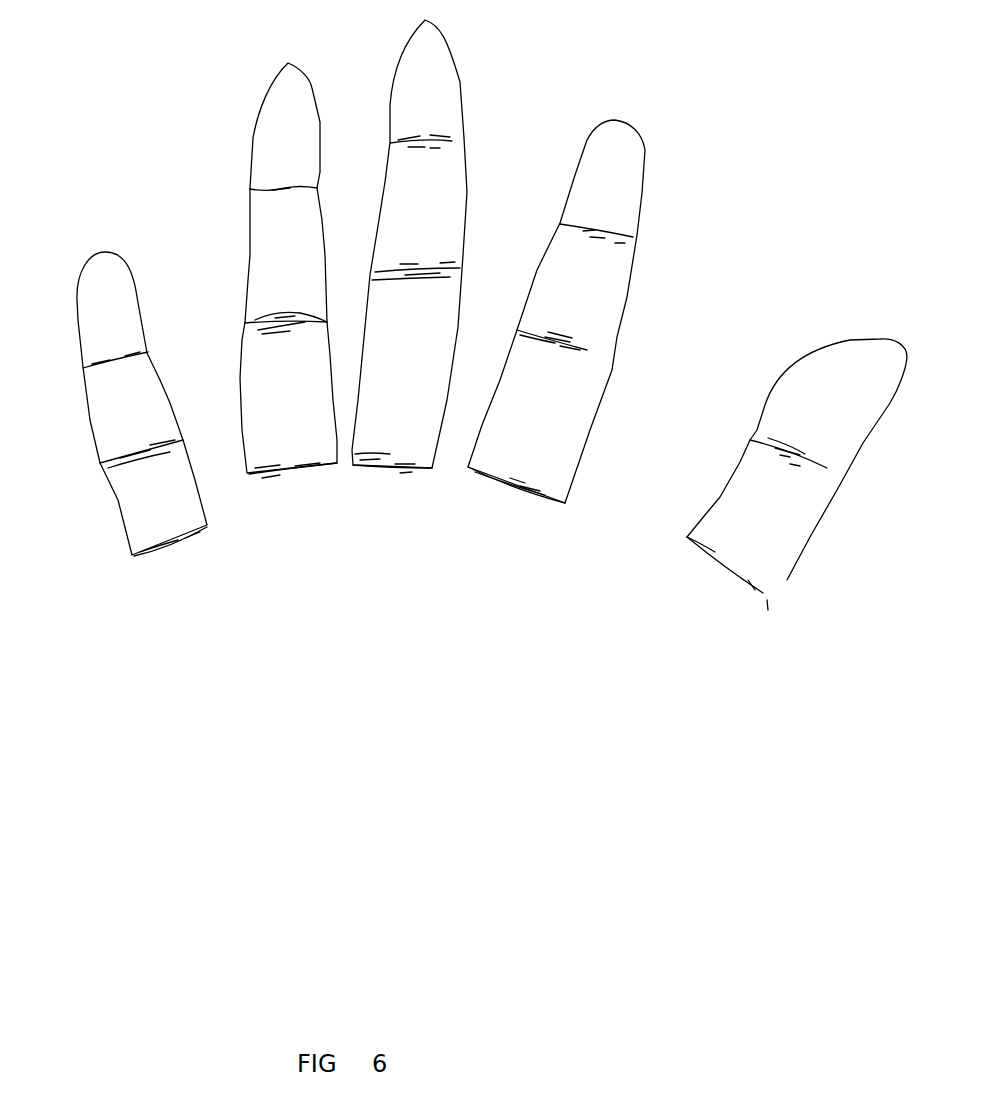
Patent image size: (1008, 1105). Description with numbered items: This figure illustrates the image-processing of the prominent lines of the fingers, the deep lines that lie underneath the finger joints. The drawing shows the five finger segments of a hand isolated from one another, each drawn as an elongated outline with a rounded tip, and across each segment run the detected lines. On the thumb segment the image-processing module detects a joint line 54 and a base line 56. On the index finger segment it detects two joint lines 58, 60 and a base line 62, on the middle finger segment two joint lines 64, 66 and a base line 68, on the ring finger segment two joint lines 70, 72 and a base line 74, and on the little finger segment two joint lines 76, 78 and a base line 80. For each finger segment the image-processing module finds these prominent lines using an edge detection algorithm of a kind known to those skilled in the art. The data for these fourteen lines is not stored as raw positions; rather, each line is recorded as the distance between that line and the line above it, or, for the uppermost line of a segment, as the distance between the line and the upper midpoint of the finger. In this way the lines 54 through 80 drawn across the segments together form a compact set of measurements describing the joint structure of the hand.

The prominent line of the finger 54 is at (750, 440).
The prominent line of the finger 56 is at (702, 547).
The prominent line of the finger 58 is at (633, 237).
The prominent line of the finger 60 is at (593, 343).
The prominent line of the finger 62 is at (553, 490).
The prominent line of the finger 64 is at (452, 141).
The prominent line of the finger 66 is at (460, 268).
The prominent line of the finger 68 is at (427, 470).
The prominent line of the finger 70 is at (250, 189).
The prominent line of the finger 72 is at (242, 322).
The prominent line of the finger 74 is at (290, 472).
The prominent line of the finger 76 is at (82, 368).
The prominent line of the finger 78 is at (97, 464).
The prominent line of the finger 80 is at (133, 556).